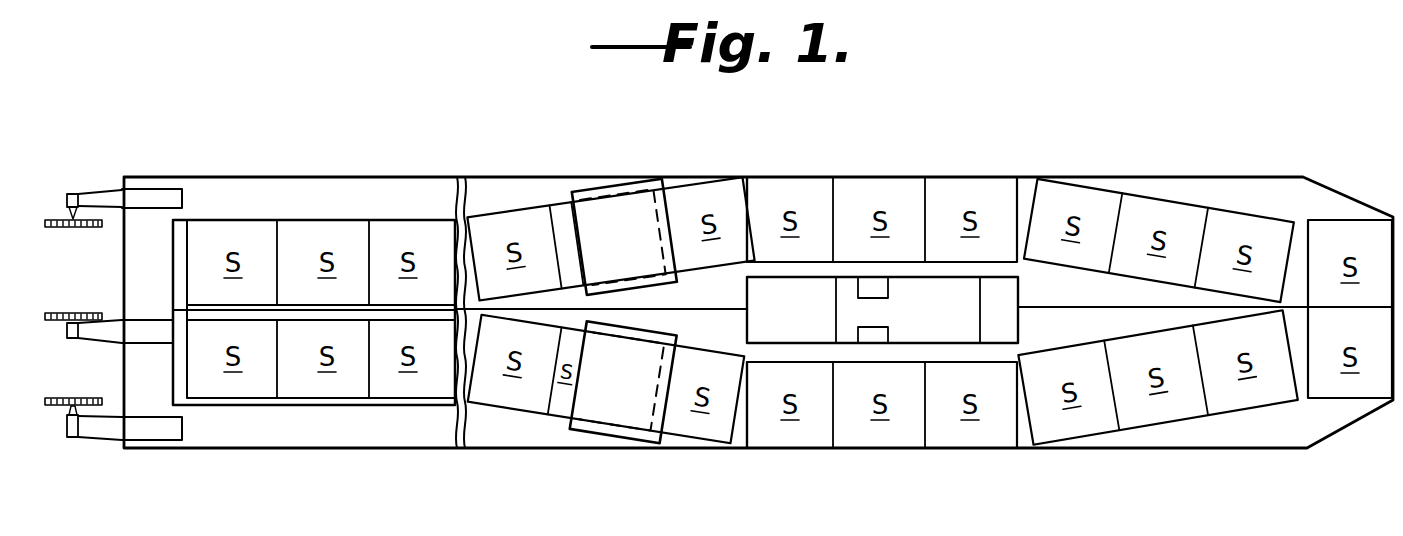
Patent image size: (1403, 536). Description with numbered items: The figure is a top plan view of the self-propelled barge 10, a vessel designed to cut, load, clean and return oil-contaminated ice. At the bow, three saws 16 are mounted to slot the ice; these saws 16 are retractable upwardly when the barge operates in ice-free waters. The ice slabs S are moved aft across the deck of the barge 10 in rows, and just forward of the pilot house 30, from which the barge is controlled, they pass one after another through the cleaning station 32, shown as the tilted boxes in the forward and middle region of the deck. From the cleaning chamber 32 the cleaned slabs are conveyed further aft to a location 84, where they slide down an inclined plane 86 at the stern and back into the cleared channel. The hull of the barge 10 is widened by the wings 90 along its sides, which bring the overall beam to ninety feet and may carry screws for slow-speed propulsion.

The self-propelled barge 10 is at (338, 160).
The saws 16 is at (92, 228).
The pilot house 30 is at (815, 327).
The cleaning station 32 is at (623, 311).
The location 84 is at (1287, 207).
The inclined plane 86 is at (1352, 217).
The wings 90 is at (737, 184).